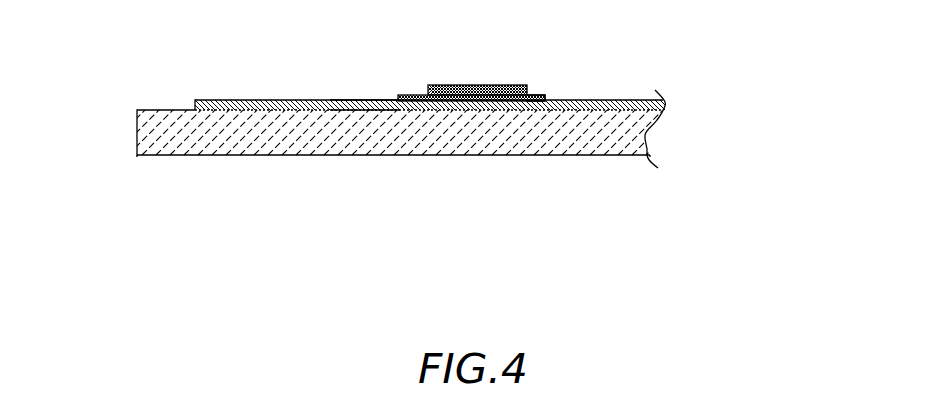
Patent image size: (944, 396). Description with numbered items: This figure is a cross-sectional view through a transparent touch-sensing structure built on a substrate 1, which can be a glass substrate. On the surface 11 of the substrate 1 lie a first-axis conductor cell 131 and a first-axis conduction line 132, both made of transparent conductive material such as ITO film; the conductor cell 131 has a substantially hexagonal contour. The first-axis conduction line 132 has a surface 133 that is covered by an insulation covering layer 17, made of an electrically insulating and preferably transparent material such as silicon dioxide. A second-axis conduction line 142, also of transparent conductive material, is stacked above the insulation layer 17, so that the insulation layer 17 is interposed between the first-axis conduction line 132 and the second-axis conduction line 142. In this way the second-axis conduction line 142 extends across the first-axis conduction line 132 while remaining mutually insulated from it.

The substrate 1 is at (653, 130).
The surface 11 is at (625, 102).
The first-axis conductor cell 131 is at (245, 100).
The first-axis conduction line 132 is at (361, 100).
The surface 133 is at (400, 98).
The second-axis conduction line 142 is at (474, 86).
The insulation covering layer 17 is at (530, 97).